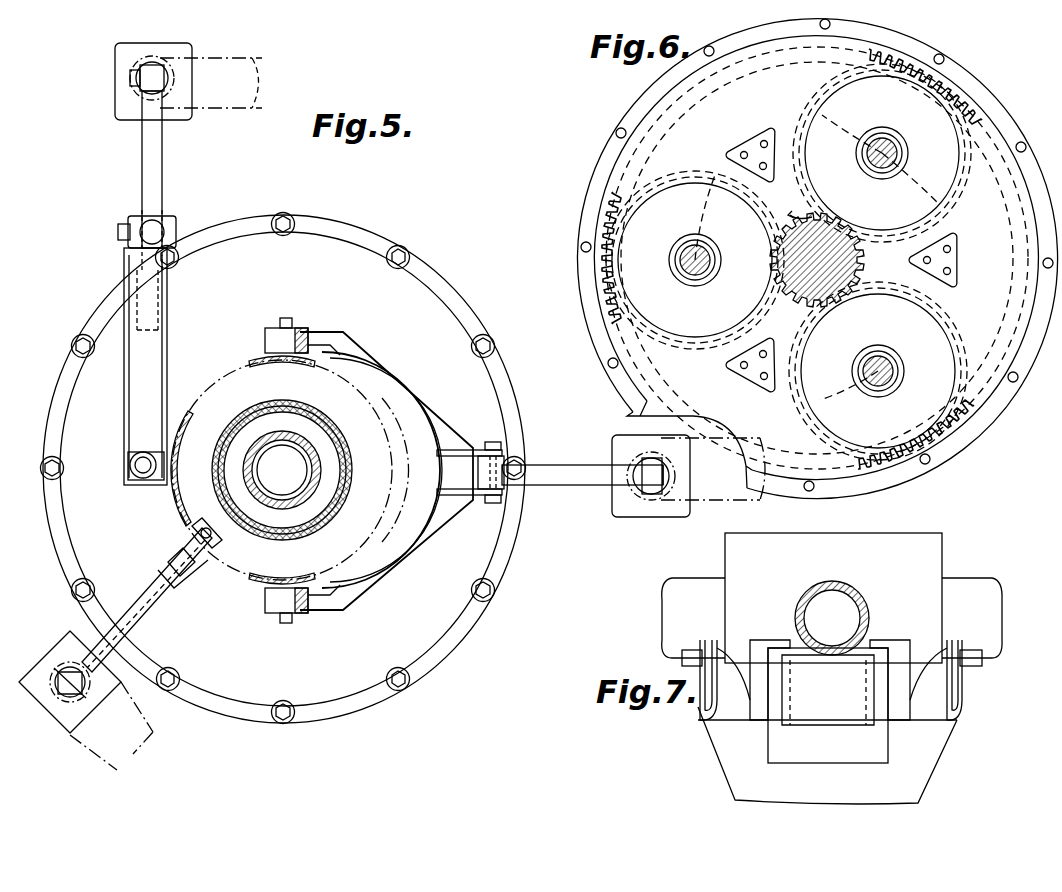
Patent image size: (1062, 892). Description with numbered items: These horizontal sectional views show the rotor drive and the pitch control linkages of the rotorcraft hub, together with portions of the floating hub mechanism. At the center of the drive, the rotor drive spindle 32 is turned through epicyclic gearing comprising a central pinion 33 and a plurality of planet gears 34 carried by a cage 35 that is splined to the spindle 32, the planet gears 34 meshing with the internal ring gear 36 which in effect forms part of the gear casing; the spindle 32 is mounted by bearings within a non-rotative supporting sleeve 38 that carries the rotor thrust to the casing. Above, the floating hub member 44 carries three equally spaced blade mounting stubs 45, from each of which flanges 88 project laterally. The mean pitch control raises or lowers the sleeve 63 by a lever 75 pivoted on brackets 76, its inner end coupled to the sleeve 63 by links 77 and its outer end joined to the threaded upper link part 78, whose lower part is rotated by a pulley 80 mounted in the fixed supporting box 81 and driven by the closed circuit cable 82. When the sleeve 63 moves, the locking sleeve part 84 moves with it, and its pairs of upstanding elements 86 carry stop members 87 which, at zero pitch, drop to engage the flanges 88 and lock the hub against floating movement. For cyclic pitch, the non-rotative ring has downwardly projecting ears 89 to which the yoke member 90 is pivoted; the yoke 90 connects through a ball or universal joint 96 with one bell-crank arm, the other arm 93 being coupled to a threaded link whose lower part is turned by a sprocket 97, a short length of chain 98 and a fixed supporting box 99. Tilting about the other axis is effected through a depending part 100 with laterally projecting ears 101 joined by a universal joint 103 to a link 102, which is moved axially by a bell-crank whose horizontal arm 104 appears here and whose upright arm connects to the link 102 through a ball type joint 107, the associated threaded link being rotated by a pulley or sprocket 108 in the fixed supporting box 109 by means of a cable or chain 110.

In FIG. 5, the rotor drive spindle 32 is at (282, 470).
In FIG. 6, the central pinion 33 is at (855, 263).
In FIG. 5, the planet gears 34 is at (440, 662).
In FIG. 6, the planet gears 34 is at (990, 122).
In FIG. 6, the cage 35 is at (945, 238).
In FIG. 6, the internal ring gear 36 is at (955, 440).
In FIG. 5, the non-rotative supporting sleeve 38 is at (322, 478).
In FIG. 7, the floating hub member 44 is at (876, 540).
In FIG. 7, the blade mounting stubs 45 is at (698, 562).
In FIG. 5, the sleeve 63 is at (308, 522).
In FIG. 5, the lever 75 is at (185, 568).
In FIG. 5, the brackets 76 is at (140, 628).
In FIG. 5, the links 77 is at (196, 537).
In FIG. 5, the upper link part 78 is at (52, 715).
In FIG. 5, the pulley 80 is at (86, 706).
In FIG. 5, the fixed supporting box 81 is at (66, 638).
In FIG. 5, the closed circuit cable 82 is at (117, 760).
In FIG. 7, the sleeve part 84 is at (742, 784).
In FIG. 7, the upstanding elements 86 is at (700, 662).
In FIG. 7, the stop members 87 is at (788, 644).
In FIG. 7, the flanges 88 is at (680, 640).
In FIG. 5, the downwardly projecting ears 89 is at (268, 360).
In FIG. 5, the yoke member 90 is at (400, 390).
In FIG. 5, the bell-crank arm 93 is at (550, 468).
In FIG. 5, the ball or universal joint 96 is at (515, 474).
In FIG. 5, the sprocket 97 is at (675, 476).
In FIG. 6, the chain 98 is at (696, 450).
In FIG. 5, the fixed supporting box 99 is at (620, 512).
In FIG. 5, the depending part 100 is at (200, 457).
In FIG. 5, the laterally projecting ears 101 is at (158, 484).
In FIG. 5, the link 102 is at (150, 358).
In FIG. 5, the universal joint 103 is at (132, 478).
In FIG. 5, the horizontal bell-crank arm 104 is at (155, 161).
In FIG. 5, the universal or ball type joint 107 is at (160, 228).
In FIG. 5, the pulley or sprocket 108 is at (182, 70).
In FIG. 5, the fixed supporting box 109 is at (118, 68).
In FIG. 5, the cable or chain 110 is at (228, 83).